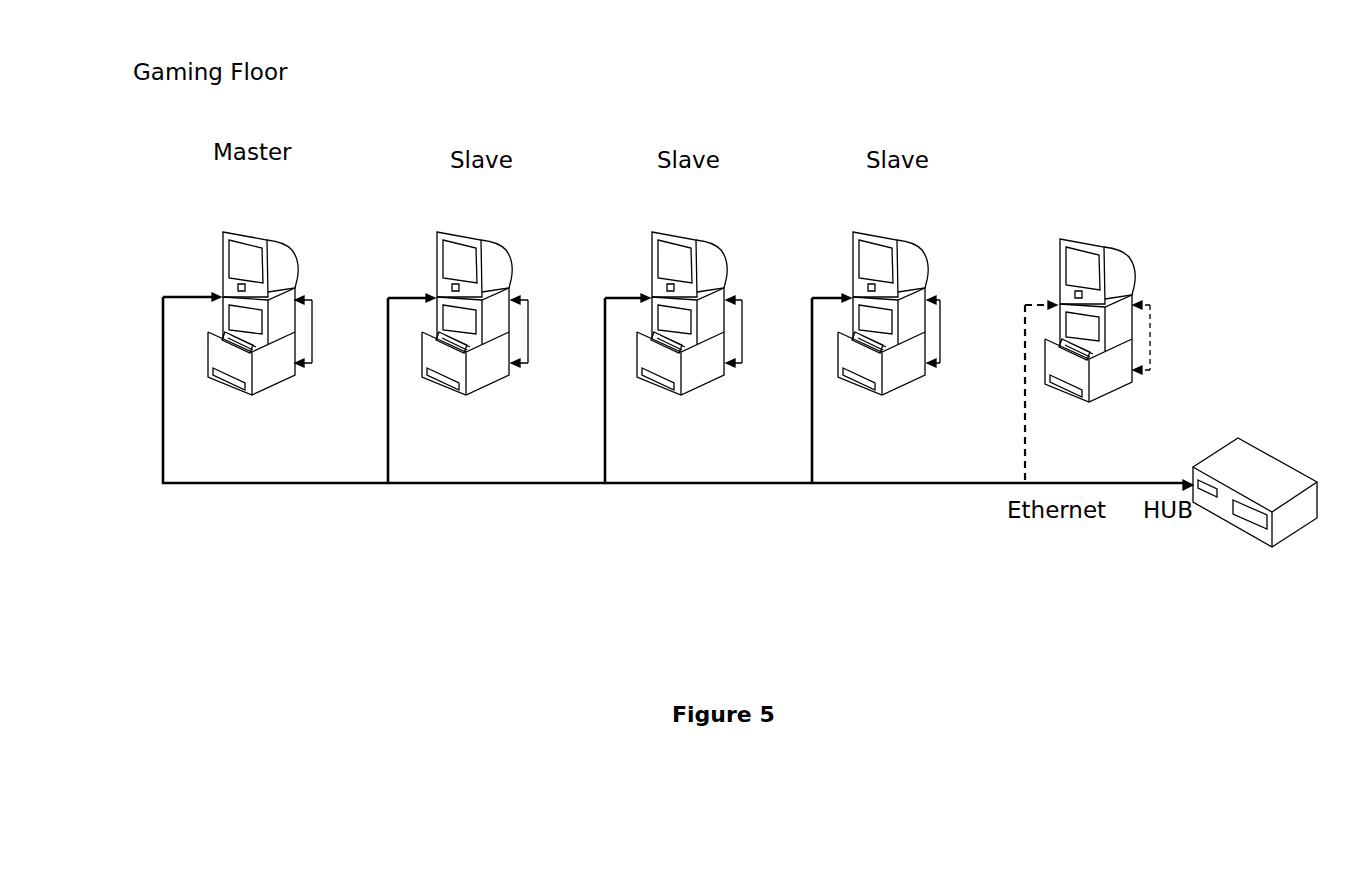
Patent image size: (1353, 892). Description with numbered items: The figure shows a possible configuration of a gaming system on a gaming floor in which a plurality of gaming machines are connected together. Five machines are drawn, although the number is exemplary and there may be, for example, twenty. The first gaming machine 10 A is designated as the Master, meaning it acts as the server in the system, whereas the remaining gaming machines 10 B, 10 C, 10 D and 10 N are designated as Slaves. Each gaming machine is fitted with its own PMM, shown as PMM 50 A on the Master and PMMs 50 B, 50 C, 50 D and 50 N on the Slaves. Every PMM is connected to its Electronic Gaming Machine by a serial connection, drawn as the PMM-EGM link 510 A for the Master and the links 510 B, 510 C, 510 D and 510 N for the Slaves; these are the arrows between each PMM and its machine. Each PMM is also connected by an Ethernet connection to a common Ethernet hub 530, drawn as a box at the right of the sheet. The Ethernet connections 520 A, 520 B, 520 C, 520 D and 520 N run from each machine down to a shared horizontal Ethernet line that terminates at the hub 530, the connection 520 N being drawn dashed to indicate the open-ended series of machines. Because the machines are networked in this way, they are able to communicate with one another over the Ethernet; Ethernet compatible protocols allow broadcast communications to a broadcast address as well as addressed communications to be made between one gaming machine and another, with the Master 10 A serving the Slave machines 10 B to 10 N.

The gaming machine 10 A is at (270, 238).
The gaming machine 10 B is at (476, 240).
The gaming machine 10 C is at (697, 240).
The gaming machine 10 D is at (897, 240).
The gaming machine 10 N is at (1105, 248).
The PMM 50 A is at (296, 286).
The PMM 50 B is at (512, 290).
The PMM 50 C is at (726, 290).
The PMM 50 D is at (928, 290).
The PMM 50 N is at (1136, 302).
The serial connection 510 A is at (317, 367).
The serial connection 510 B is at (528, 366).
The serial connection 510 C is at (742, 366).
The serial connection 510 D is at (940, 366).
The serial connection 510 N is at (1150, 372).
The Ethernet connection 520 A is at (162, 450).
The Ethernet connection 520 B is at (387, 450).
The Ethernet connection 520 C is at (605, 445).
The Ethernet connection 520 D is at (812, 450).
The Ethernet connection 520 N is at (1025, 462).
The Ethernet hub 530 is at (1227, 525).